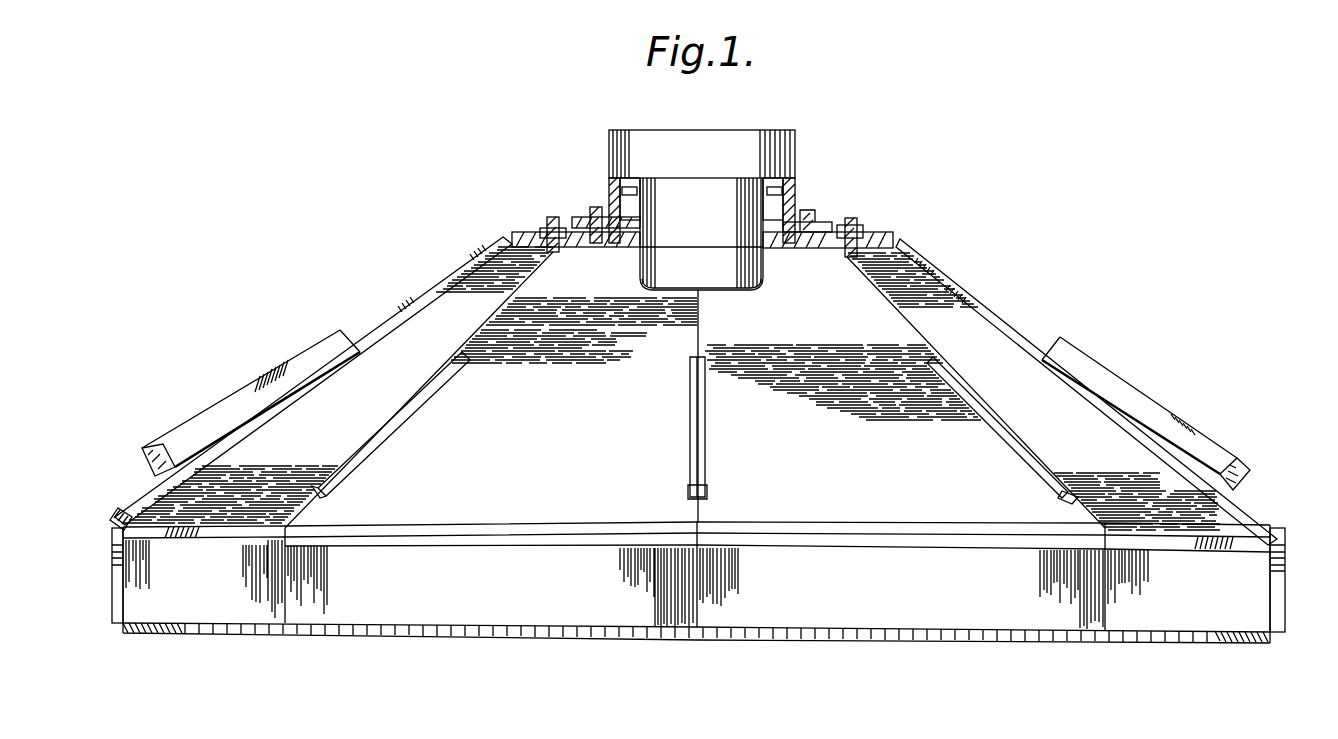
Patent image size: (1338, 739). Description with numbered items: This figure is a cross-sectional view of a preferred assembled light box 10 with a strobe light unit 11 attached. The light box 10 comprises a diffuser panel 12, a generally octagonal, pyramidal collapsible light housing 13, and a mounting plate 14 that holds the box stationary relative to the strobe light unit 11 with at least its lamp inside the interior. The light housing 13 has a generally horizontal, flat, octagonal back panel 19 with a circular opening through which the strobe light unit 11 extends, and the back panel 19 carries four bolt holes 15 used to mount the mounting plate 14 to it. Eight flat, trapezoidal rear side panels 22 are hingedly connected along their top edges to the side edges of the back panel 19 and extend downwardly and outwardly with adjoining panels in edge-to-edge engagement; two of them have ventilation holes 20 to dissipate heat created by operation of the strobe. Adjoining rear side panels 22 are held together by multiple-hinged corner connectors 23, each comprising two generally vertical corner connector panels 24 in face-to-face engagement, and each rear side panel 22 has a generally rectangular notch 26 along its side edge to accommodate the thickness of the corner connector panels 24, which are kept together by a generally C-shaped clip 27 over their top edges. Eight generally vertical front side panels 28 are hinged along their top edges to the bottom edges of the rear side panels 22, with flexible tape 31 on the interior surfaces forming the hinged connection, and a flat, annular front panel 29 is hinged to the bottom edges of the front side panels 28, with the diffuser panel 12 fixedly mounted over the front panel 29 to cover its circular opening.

The light box 10 is at (466, 198).
The strobe light unit 11 is at (773, 130).
The diffuser panel 12 is at (698, 605).
The light housing 13 is at (1003, 304).
The mounting plate 14 is at (821, 212).
The bolt holes 15 is at (549, 218).
The back panel 19 is at (592, 247).
The ventilation holes 20 is at (430, 295).
The rear side panels 22 is at (200, 477).
The corner connectors 23 is at (704, 391).
The corner connector panels 24 is at (312, 350).
The notch 26 is at (418, 396).
The C-shaped clip 27 is at (142, 465).
The front side panels 28 is at (185, 592).
The front panel 29 is at (245, 631).
The flexible tape 31 is at (352, 523).